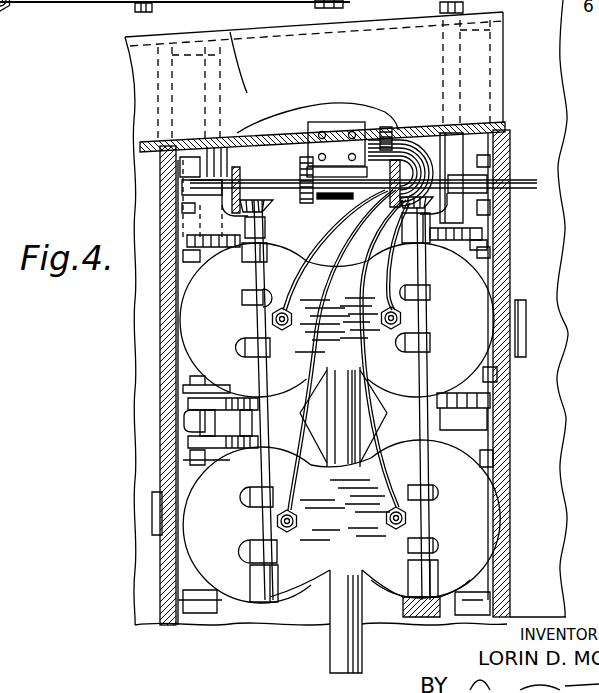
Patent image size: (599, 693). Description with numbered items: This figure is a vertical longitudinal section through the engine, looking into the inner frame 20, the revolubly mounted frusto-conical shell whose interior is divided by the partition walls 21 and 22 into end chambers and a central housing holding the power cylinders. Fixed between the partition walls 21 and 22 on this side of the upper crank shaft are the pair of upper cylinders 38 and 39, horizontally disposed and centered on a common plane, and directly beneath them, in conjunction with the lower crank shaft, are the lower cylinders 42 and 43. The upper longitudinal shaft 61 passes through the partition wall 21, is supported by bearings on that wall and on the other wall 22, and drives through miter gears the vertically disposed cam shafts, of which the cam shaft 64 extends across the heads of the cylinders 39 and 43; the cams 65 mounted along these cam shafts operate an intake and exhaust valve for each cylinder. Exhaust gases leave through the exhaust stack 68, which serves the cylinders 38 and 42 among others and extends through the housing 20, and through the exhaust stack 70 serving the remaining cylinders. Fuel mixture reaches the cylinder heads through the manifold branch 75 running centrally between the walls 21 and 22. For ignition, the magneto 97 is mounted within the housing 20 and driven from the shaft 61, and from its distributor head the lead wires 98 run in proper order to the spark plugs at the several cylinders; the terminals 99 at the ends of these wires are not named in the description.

The inner frame 20 is at (497, 84).
The partition wall 21 is at (491, 234).
The partition wall 22 is at (160, 378).
The upper cylinder 38 is at (417, 320).
The upper cylinder 39 is at (265, 320).
The lower cylinder 42 is at (422, 519).
The lower cylinder 43 is at (438, 366).
The longitudinally disposed shaft 61 is at (529, 181).
The cam shaft 64 is at (248, 268).
The cam 65 is at (250, 348).
The exhaust stack 68 is at (84, 0).
The exhaust stack 70 is at (234, 135).
The manifold branch 75 is at (341, 416).
The magneto 97 is at (340, 122).
The lead wires 98 is at (399, 145).
The cable terminals 99 is at (392, 328).